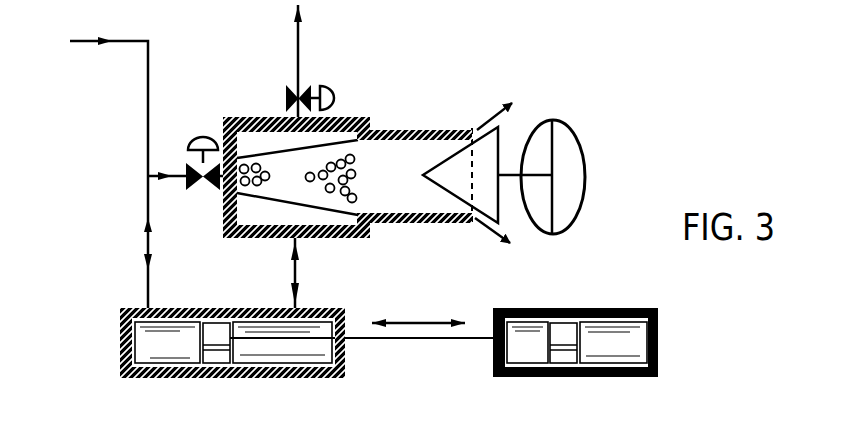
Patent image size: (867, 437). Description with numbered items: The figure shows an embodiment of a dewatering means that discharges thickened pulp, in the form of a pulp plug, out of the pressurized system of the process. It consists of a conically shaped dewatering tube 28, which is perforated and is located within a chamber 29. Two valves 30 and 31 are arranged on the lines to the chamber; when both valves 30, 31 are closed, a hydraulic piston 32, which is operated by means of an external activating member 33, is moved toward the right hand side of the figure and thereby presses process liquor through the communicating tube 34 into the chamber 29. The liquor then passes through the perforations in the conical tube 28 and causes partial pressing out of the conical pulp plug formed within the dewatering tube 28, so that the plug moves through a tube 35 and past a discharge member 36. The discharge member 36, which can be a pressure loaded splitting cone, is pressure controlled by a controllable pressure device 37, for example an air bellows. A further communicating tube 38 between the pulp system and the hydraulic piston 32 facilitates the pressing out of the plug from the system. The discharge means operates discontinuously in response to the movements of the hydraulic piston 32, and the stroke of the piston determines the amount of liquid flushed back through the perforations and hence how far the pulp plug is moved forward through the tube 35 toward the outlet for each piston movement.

The conically shaped dewatering tube 28 is at (277, 188).
The chamber 29 is at (357, 238).
The valve 30 is at (200, 136).
The valve 31 is at (338, 90).
The hydraulic piston 32 is at (200, 378).
The external activating member 33 is at (637, 377).
The communicating tube 34 is at (298, 270).
The tube 35 is at (407, 131).
The discharge member 36 is at (488, 157).
The controllable pressure device 37 is at (568, 167).
The communicating tube 38 is at (148, 242).